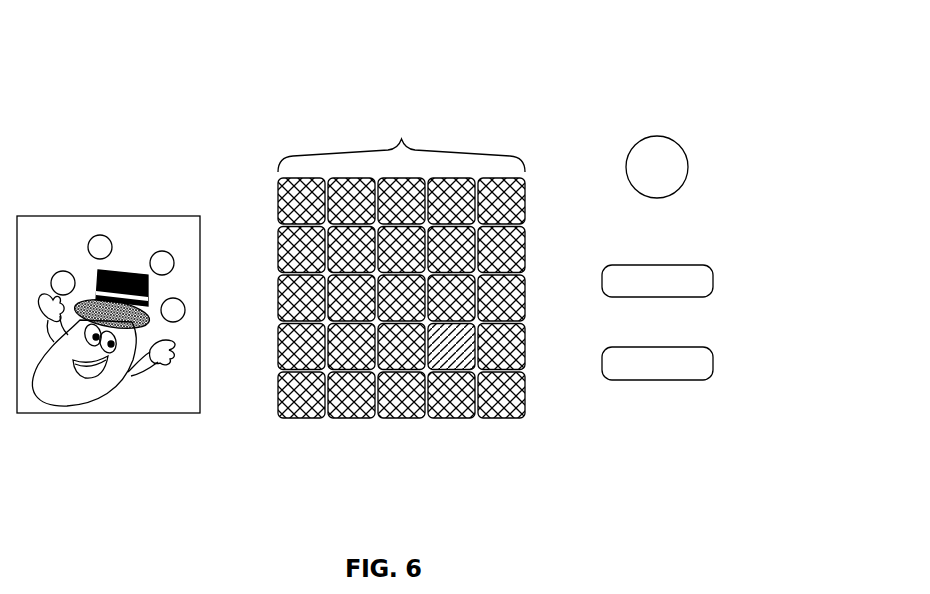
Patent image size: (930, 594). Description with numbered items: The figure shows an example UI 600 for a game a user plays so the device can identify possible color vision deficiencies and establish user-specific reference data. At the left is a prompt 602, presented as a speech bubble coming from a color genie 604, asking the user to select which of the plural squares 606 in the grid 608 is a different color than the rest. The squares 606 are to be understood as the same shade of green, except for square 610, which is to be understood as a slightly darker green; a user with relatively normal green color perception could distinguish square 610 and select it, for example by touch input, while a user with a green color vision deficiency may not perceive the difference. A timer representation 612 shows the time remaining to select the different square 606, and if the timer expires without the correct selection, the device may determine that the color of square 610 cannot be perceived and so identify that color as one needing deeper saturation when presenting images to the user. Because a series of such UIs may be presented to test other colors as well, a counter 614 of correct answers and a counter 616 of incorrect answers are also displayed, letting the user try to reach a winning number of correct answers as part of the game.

The UI 600 is at (540, 73).
The prompt 602 is at (192, 172).
The color genie 604 is at (118, 413).
The squares 606 is at (393, 309).
The grid 608 is at (393, 339).
The square 610 is at (463, 417).
The timer representation 612 is at (687, 180).
The counter of correct answers 614 is at (712, 280).
The counter of incorrect answers 616 is at (712, 363).